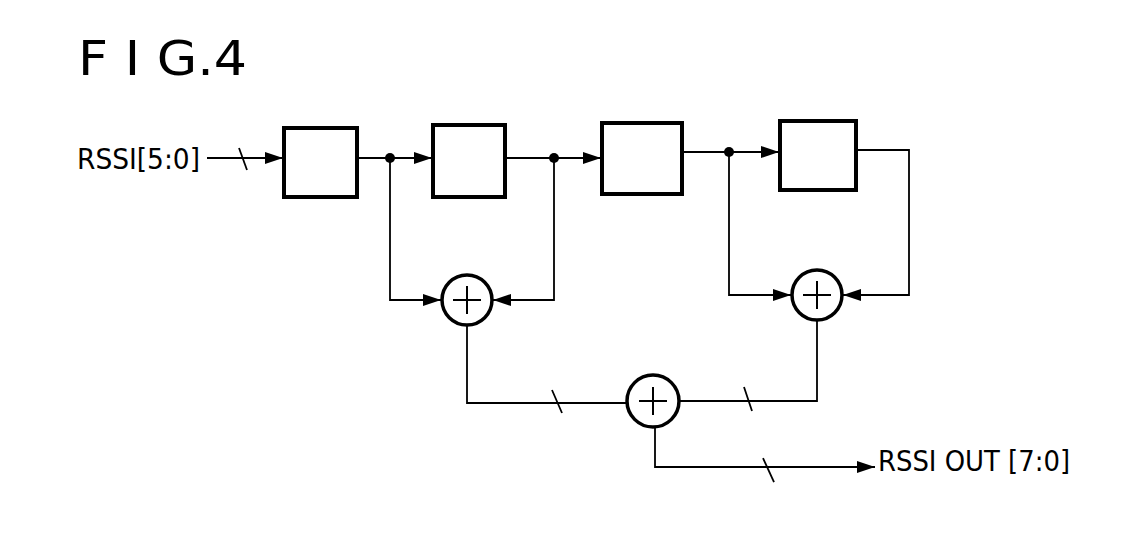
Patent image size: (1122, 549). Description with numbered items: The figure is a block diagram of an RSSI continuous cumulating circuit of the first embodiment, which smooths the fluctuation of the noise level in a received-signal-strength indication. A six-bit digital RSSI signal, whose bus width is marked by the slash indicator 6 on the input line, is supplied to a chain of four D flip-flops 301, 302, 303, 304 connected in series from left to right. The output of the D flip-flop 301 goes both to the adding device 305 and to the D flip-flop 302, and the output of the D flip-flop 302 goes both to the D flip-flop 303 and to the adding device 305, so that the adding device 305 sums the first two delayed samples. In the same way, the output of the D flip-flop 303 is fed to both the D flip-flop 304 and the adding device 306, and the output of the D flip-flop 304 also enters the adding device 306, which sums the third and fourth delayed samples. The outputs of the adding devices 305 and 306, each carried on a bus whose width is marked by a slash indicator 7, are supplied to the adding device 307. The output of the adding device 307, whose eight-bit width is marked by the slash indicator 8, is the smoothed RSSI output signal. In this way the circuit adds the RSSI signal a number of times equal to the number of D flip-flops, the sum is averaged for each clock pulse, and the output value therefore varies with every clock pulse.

The D flip-flop 301 is at (317, 128).
The D flip-flop 302 is at (465, 125).
The D flip-flop 303 is at (635, 123).
The D flip-flop 304 is at (813, 121).
The adding device 305 is at (483, 275).
The adding device 306 is at (835, 268).
The adding device 307 is at (668, 374).
The 6-bit bus width indicator 6 is at (244, 149).
The 7-bit bus width indicator 7 is at (656, 389).
The 8-bit bus width indicator 8 is at (773, 458).